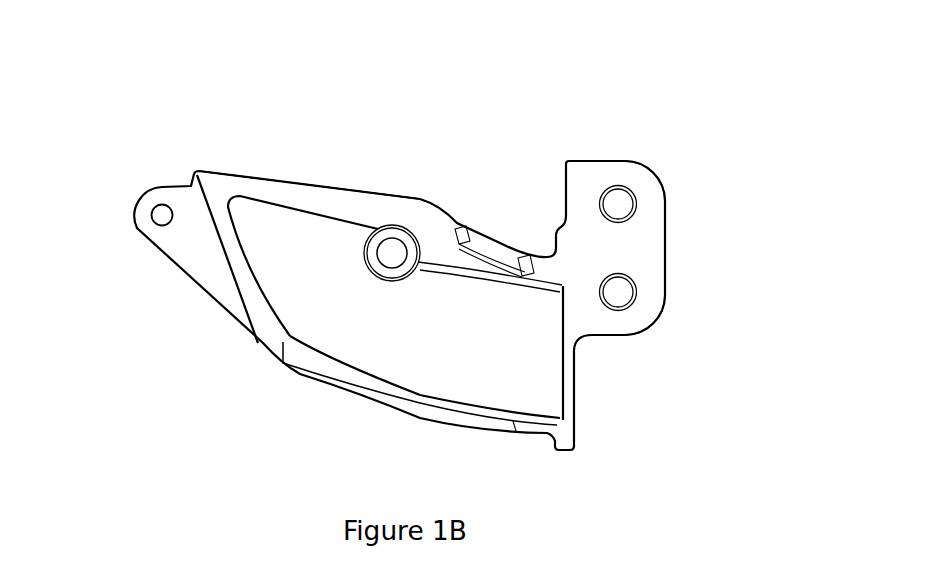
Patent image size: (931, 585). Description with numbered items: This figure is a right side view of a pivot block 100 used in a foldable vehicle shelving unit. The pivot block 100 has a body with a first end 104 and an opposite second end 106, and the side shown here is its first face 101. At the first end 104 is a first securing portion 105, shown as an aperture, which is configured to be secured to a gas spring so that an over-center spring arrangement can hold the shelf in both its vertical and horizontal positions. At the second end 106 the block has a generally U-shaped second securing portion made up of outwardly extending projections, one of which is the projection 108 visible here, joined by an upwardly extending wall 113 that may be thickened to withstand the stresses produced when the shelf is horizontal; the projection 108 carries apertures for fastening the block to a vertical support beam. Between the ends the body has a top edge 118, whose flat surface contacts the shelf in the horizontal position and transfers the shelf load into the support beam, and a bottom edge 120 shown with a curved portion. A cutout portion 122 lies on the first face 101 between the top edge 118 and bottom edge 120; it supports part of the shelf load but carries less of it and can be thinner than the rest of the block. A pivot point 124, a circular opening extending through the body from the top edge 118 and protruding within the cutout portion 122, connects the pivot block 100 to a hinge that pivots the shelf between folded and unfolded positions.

The pivot block 100 is at (353, 100).
The first face 101 is at (317, 322).
The first end 104 is at (166, 263).
The first securing portion 105 is at (160, 211).
The second end 106 is at (687, 258).
The outwardly extending projection 108 is at (600, 160).
The upwardly extending wall 113 is at (564, 205).
The top edge 118 is at (288, 168).
The bottom edge 120 is at (352, 393).
The cutout portion 122 is at (493, 383).
The pivot point 124 is at (394, 240).